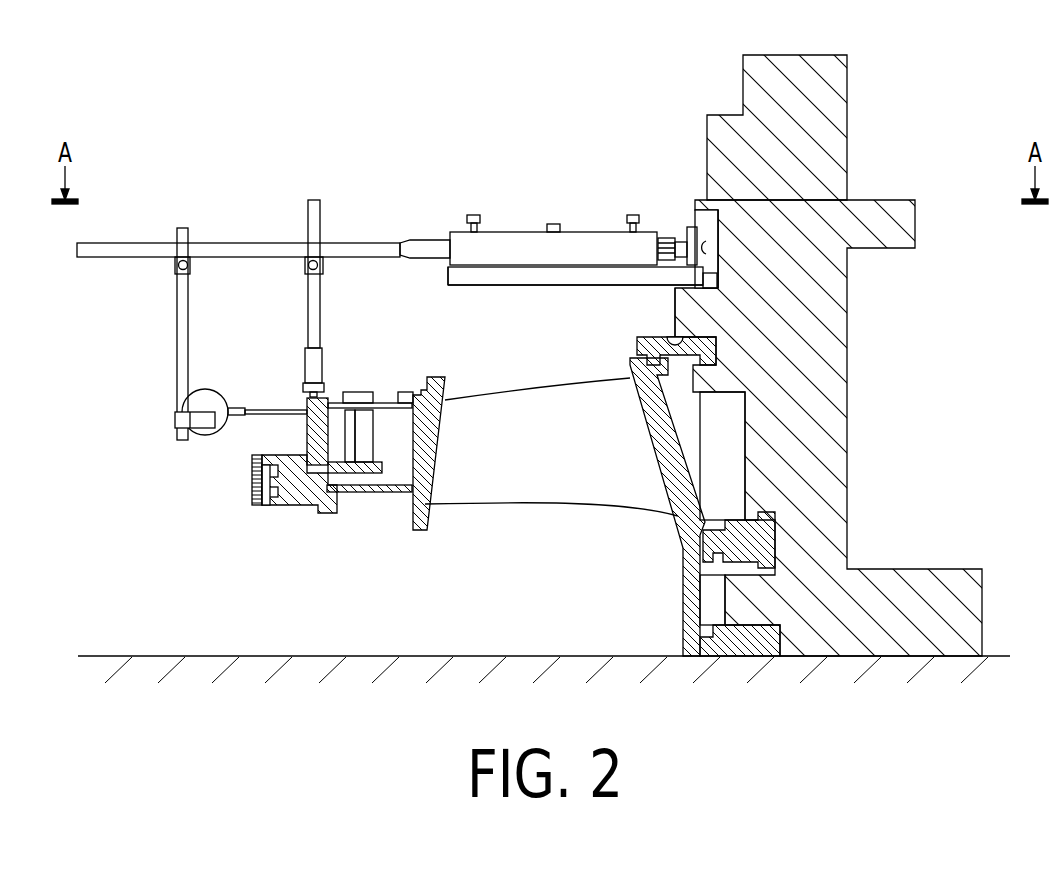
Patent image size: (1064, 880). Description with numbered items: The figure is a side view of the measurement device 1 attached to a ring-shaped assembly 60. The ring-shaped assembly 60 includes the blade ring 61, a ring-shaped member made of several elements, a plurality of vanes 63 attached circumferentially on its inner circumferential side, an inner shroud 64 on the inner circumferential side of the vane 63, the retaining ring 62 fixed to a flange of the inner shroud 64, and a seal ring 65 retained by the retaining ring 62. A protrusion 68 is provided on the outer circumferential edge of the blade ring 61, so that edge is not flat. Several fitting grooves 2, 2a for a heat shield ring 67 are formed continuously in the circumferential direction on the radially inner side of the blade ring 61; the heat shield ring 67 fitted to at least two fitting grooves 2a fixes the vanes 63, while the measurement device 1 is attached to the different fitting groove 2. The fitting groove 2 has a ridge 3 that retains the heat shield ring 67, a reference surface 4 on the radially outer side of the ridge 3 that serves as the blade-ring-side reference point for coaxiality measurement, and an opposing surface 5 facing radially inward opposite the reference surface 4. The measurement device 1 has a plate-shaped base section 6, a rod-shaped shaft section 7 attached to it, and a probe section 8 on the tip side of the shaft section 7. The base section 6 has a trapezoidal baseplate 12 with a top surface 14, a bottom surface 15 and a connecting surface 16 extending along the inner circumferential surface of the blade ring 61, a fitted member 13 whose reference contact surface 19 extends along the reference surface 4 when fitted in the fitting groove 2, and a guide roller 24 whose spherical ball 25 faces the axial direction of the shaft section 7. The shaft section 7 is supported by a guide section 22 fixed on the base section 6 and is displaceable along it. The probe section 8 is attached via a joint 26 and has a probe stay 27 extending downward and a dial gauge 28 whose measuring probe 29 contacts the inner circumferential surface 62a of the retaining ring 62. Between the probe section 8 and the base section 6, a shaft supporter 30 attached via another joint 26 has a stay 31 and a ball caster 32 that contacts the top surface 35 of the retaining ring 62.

The measurement device 1 is at (122, 102).
The fitting groove 2 is at (690, 245).
The fitting grooves 2a is at (690, 372).
The ridge 3 is at (690, 288).
The reference surface 4 is at (717, 287).
The opposing surface 5 is at (718, 254).
The base section 6 is at (532, 278).
The shaft section 7 is at (362, 243).
The probe section 8 is at (158, 338).
The baseplate 12 is at (575, 304).
The fitted member 13 is at (711, 218).
The top surface 14 is at (512, 260).
The bottom surface 15 is at (478, 287).
The connecting surface 16 is at (718, 285).
The reference contact surface 19 is at (699, 181).
The guide section 22 is at (573, 243).
The guide roller 24 is at (683, 247).
The ball 25 is at (646, 205).
The joint 26 is at (178, 265).
The probe stay 27 is at (188, 324).
The dial gauge 28 is at (207, 437).
The measuring probe 29 is at (260, 410).
The shaft supporter 30 is at (334, 323).
The stay 31 is at (314, 294).
The ball caster 32 is at (328, 388).
The top surface 35 is at (332, 398).
The ring-shaped assembly 60 is at (502, 540).
The blade ring 61 is at (835, 422).
The retaining ring 62 is at (298, 496).
The inner circumferential surface 62a is at (307, 432).
The vanes 63 is at (562, 480).
The inner shroud 64 is at (415, 530).
The seal ring 65 is at (257, 507).
The heat shield ring 67 is at (635, 347).
The protrusion 68 is at (835, 130).